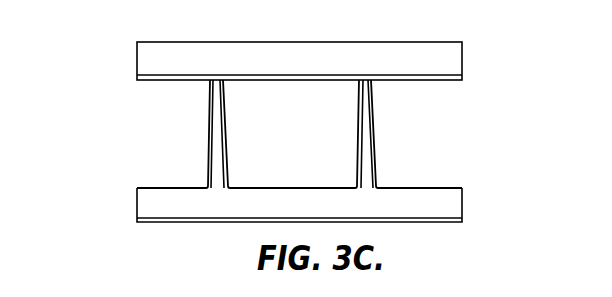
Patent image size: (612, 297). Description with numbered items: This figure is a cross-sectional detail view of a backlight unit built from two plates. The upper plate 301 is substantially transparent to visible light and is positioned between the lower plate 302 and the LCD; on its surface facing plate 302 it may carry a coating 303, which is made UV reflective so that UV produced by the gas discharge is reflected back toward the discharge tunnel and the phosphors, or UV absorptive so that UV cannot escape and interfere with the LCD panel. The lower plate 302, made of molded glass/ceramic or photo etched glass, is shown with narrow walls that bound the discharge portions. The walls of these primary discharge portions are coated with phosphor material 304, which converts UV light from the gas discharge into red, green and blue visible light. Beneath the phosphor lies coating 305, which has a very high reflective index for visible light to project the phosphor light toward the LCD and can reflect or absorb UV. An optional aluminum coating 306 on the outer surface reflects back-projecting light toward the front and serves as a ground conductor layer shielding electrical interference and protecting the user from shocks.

The plate 301 is at (150, 60).
The plate 302 is at (150, 206).
The coating 303 is at (137, 78).
The phosphor coating 304 is at (210, 137).
The coating 305 is at (137, 188).
The coating 306 is at (137, 220).